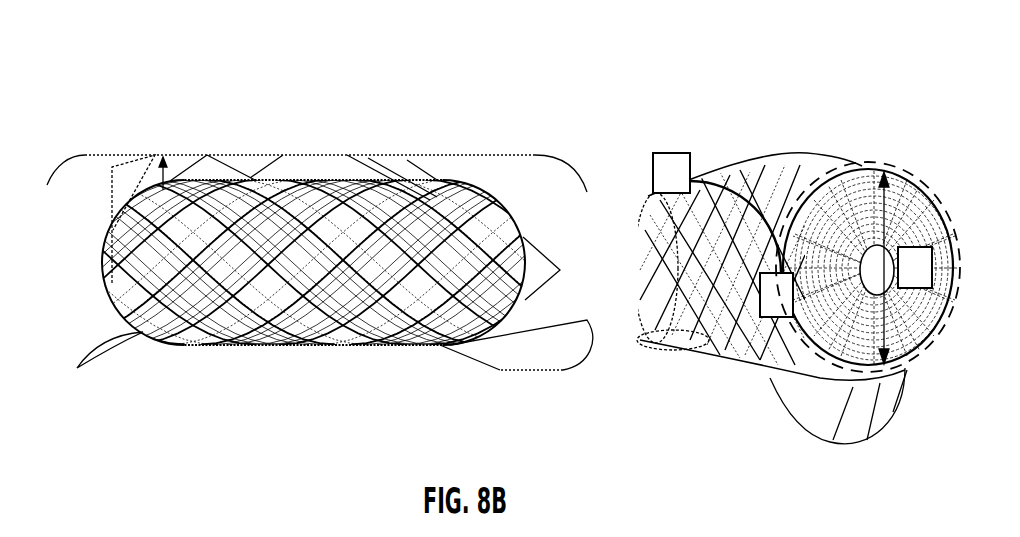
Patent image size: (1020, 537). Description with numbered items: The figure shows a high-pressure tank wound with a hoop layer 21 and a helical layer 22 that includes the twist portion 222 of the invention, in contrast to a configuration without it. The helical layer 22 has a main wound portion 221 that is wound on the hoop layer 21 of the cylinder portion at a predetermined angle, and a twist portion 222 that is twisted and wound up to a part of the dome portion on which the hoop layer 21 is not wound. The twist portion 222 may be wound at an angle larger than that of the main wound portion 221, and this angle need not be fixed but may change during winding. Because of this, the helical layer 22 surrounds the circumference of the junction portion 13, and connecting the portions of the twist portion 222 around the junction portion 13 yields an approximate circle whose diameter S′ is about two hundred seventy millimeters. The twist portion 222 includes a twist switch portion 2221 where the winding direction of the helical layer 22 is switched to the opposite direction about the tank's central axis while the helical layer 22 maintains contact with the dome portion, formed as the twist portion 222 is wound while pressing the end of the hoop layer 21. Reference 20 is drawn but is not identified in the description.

The junction portion 13 is at (883, 162).
The stent 20 is at (858, 73).
The hoop layer 21 is at (273, 303).
The helical layer 22 is at (347, 292).
The main wound portion 221 is at (172, 107).
The twist portion 222 is at (124, 145).
The twist switch portion 2221 is at (775, 318).